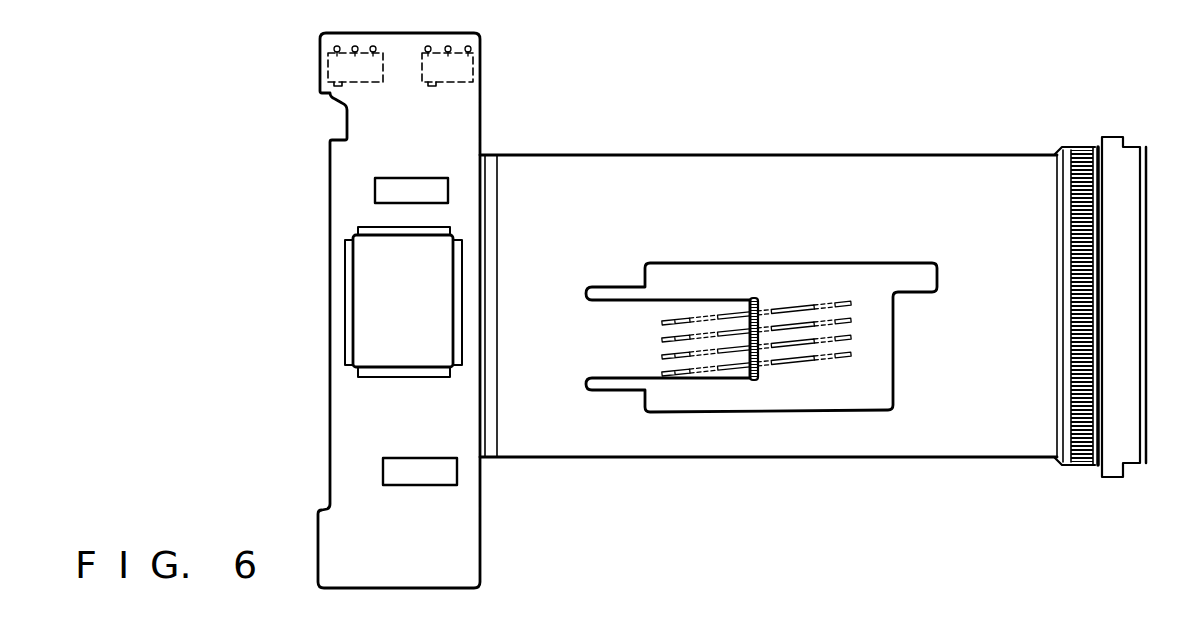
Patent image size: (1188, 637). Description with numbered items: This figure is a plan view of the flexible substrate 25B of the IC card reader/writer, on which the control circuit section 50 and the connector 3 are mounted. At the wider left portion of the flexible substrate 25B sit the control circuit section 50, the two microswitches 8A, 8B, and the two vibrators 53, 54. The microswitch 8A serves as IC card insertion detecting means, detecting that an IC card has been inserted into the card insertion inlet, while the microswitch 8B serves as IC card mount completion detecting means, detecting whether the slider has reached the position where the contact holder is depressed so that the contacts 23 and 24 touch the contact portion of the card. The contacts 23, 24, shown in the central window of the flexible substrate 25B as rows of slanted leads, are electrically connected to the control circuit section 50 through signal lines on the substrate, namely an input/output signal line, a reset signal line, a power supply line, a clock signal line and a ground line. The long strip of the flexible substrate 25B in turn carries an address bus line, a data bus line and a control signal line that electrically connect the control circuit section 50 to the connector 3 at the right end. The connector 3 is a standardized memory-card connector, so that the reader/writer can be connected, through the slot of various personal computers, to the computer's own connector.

The connector 3 is at (1108, 150).
The microswitch 8A is at (330, 70).
The microswitch 8B is at (470, 70).
The contact 23 is at (733, 298).
The contact 24 is at (835, 296).
The flexible substrate 25B is at (752, 168).
The control circuit section 50 is at (365, 317).
The vibrator 53 is at (414, 186).
The vibrator 54 is at (421, 488).